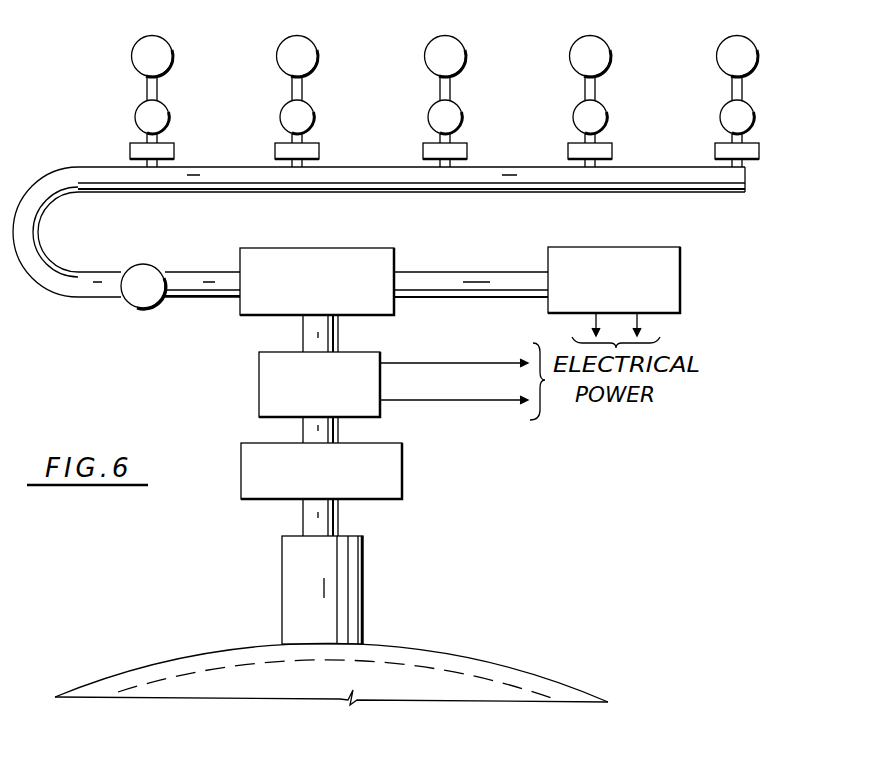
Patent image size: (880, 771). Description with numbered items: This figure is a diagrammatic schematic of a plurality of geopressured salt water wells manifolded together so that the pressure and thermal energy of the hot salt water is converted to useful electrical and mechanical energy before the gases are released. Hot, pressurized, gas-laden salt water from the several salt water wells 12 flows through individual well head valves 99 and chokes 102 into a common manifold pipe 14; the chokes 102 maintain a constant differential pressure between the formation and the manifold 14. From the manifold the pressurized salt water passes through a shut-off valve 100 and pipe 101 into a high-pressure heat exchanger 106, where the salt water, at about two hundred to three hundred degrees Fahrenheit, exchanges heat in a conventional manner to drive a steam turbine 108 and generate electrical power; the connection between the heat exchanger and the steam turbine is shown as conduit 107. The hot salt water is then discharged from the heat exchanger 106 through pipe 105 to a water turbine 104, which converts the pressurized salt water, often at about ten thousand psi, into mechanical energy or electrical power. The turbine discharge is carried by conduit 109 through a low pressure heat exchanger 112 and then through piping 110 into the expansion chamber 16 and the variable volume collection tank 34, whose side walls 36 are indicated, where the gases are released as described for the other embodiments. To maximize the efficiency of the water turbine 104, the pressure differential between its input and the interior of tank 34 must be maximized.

The salt water wells 12 is at (455, 59).
The well head valves 99 is at (462, 121).
The chokes 102 is at (467, 154).
The common manifold pipe 14 is at (480, 193).
The shut-off valve 100 is at (140, 309).
The pipe 101 is at (217, 272).
The high-pressure heat exchanger 106 is at (298, 249).
The pipe 105 is at (338, 337).
The conduit 107 is at (513, 299).
The steam turbine 108 is at (680, 290).
The water turbine 104 is at (258, 390).
The conduit 109 is at (339, 431).
The low pressure heat exchanger 112 is at (402, 471).
The piping 110 is at (303, 516).
The closed chamber 16 is at (360, 605).
The variable volume collection tank 34 is at (508, 668).
The side walls 36 is at (202, 672).